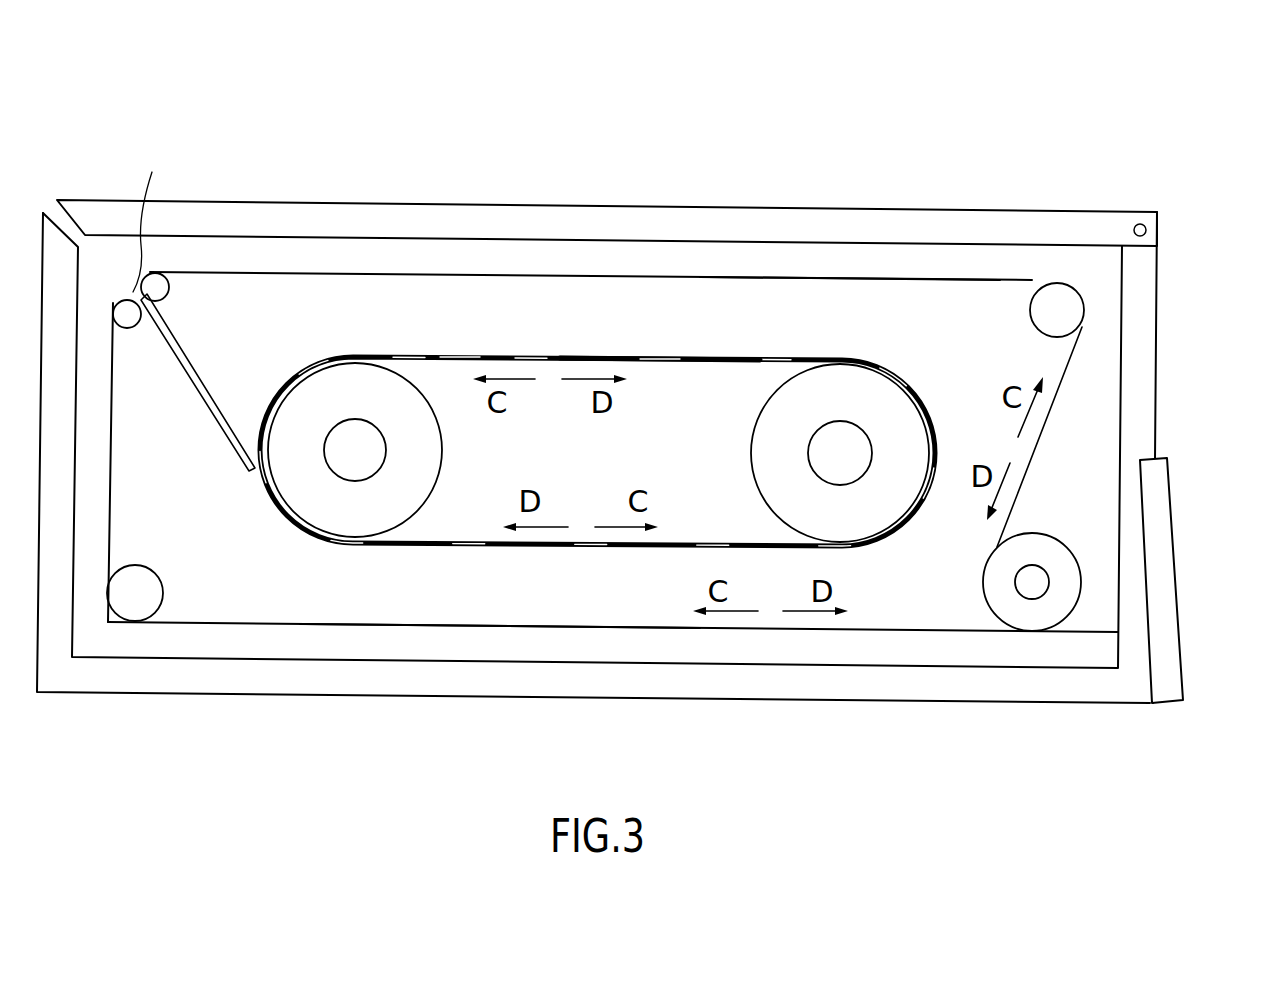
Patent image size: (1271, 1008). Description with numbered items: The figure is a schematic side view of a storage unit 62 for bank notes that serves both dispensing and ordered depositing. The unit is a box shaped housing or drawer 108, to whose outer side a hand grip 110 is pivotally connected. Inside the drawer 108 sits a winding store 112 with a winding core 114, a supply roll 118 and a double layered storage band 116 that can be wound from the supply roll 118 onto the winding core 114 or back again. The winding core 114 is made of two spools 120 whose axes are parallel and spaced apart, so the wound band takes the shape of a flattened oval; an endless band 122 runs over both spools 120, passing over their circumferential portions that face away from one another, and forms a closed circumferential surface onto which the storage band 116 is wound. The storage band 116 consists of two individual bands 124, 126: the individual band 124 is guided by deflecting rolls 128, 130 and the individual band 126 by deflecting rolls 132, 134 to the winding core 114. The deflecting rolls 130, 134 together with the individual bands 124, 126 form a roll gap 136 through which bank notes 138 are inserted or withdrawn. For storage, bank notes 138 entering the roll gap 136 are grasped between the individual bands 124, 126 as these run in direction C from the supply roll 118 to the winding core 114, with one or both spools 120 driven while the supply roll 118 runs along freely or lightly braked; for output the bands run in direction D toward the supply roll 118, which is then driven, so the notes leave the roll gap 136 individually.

The cleaning assembly 62 is at (774, 145).
The drawer 108 is at (847, 685).
The hand grip 110 is at (1165, 545).
The winding store 112 is at (368, 282).
The winding core 114 is at (690, 556).
The storage band 116 is at (216, 422).
The supply roll 118 is at (1032, 582).
The spools 120 is at (355, 461).
The endless band 122 is at (678, 363).
The individual band 124 is at (530, 625).
The individual band 126 is at (848, 278).
The deflecting roll 128 is at (147, 598).
The deflecting roll 130 is at (126, 318).
The deflecting roll 132 is at (1045, 303).
The deflecting roll 134 is at (156, 288).
The roll gap 136 is at (153, 214).
The bank notes 138 is at (470, 356).